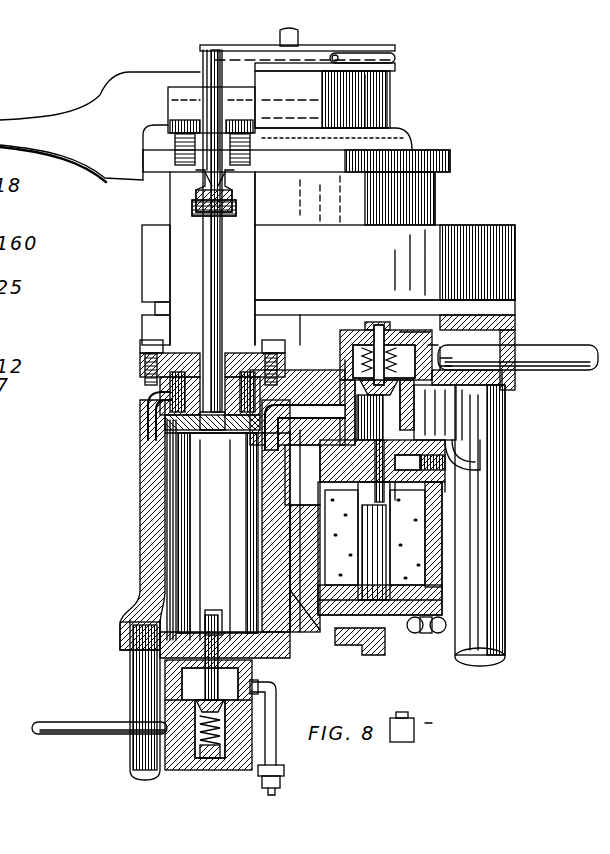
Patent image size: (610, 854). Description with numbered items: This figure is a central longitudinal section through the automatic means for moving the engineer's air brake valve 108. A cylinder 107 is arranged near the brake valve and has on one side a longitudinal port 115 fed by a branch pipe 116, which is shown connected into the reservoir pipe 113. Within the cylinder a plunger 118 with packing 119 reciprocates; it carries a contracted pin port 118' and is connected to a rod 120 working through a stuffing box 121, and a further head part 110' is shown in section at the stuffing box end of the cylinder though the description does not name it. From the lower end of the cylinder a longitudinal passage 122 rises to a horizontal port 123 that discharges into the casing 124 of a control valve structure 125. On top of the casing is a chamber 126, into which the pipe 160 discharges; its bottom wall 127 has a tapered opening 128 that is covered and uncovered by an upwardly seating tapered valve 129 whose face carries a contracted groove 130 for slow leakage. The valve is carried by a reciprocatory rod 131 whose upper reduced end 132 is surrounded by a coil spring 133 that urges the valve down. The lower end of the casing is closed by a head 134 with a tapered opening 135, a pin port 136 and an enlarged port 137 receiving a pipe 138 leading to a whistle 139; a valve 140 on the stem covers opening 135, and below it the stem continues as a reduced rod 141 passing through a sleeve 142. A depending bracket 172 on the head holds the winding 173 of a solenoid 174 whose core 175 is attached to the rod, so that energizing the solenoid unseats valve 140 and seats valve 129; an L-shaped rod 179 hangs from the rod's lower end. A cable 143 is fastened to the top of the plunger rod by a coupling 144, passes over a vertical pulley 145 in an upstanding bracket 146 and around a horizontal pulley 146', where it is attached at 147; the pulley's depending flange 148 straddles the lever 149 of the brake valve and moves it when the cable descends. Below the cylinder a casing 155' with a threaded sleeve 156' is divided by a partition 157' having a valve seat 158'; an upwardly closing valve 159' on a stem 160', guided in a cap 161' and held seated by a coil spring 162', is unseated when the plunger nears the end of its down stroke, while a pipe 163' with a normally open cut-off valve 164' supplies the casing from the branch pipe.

The cylinder 107 is at (183, 538).
The engineer's air brake valve 108 is at (425, 196).
The head cavity 110' is at (167, 401).
The pipe 113 is at (505, 640).
The longitudinal port 115 is at (153, 503).
The branch pipe 116 is at (138, 714).
The plunger 118 is at (157, 540).
The pin port 118' is at (180, 427).
The packing 119 is at (170, 440).
The rod 120 is at (215, 328).
The stuffing box 121 is at (160, 396).
The longitudinal port 122 is at (305, 636).
The horizontal port 123 is at (298, 370).
The casing 124 is at (456, 418).
The control valve structure 125 is at (434, 324).
The chamber 126 is at (345, 340).
The bottom wall 127 is at (345, 360).
The tapered opening 128 is at (440, 358).
The tapered valve 129 is at (440, 366).
The contracted groove 130 is at (428, 345).
The reciprocatory rod 131 is at (400, 415).
The upper reduced end 132 is at (400, 332).
The compressible coil spring 133 is at (375, 330).
The head 134 is at (447, 478).
The tapered opening 135 is at (480, 452).
The pin port 136 is at (448, 462).
The enlarged port 137 is at (445, 490).
The pipe 138 is at (307, 475).
The whistle 139 is at (465, 432).
The valve 140 is at (160, 484).
The reduced rod 141 is at (386, 515).
The sleeve 142 is at (408, 500).
The flexible element 143 is at (395, 58).
The coupling 144 is at (194, 204).
The vertical grooved pulley 145 is at (205, 106).
The upstanding bracket 146 is at (170, 258).
The horizontal grooved pulley 146' is at (327, 77).
The cable attachment 147 is at (388, 78).
The depending curved flange 148 is at (360, 112).
The lever 149 is at (30, 122).
The casing 155' is at (136, 657).
The screw-threaded tubular portion 156' is at (105, 700).
The partition 157' is at (128, 701).
The valve seat 158' is at (300, 722).
The upwardly closing valve 159' is at (142, 739).
The pipe 160 is at (518, 358).
The rod or stem 160' is at (95, 645).
The cap 161' is at (227, 772).
The coil spring 162' is at (191, 729).
The pipe 163' is at (306, 790).
The manually operated cut off valve 164' is at (311, 768).
The depending bracket 172 is at (435, 565).
The coil or winding 173 is at (405, 542).
The solenoid 174 is at (402, 530).
The vertically movable core 175 is at (400, 585).
The L-shaped rod 179 is at (360, 656).